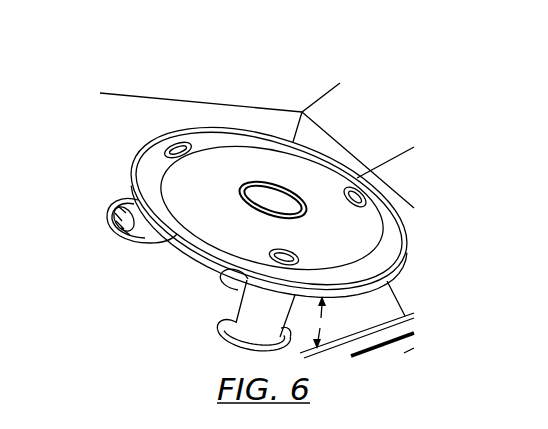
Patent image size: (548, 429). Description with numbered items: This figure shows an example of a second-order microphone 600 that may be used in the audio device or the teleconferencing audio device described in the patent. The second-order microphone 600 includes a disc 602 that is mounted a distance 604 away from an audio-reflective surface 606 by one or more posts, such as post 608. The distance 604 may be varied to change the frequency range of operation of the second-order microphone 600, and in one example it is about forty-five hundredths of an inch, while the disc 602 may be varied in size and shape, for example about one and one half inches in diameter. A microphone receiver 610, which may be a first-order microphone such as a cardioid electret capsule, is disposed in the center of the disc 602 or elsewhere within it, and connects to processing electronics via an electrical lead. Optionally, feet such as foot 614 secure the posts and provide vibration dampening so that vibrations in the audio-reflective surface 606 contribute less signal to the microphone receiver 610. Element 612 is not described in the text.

The second-order microphone 600 is at (210, 82).
The disc 602 is at (200, 190).
The distance 604 is at (328, 327).
The audio-reflective surface 606 is at (153, 286).
The post 608 is at (137, 199).
The microphone receiver 610 is at (275, 203).
The mounting slot 612 is at (258, 261).
The foot 614 is at (126, 231).